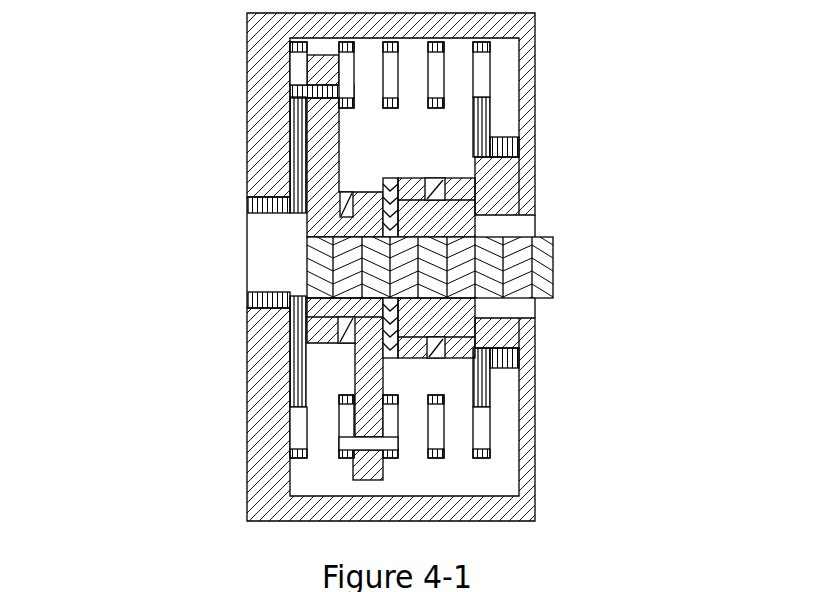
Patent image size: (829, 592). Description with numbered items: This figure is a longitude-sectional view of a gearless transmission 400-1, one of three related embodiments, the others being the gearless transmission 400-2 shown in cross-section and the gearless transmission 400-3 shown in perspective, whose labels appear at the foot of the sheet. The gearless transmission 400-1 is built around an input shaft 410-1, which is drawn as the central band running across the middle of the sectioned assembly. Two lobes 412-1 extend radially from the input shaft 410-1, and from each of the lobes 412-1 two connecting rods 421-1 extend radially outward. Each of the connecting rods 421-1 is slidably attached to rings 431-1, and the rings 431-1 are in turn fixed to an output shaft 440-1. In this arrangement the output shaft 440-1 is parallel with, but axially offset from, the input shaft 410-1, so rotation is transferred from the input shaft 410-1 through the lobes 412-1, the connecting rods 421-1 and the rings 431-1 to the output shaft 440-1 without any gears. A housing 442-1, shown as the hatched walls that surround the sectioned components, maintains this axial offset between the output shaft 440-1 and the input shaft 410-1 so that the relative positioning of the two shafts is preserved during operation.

The gearless transmission 400-1 is at (200, 111).
The gearless transmission 400-2 is at (54, 584).
The gearless transmission 400-3 is at (736, 581).
The input shaft 410-1 is at (532, 272).
The lobes 412-1 is at (343, 307).
The connecting rods 421-1 is at (463, 190).
The rings 431-1 is at (437, 460).
The output shaft 440-1 is at (248, 202).
The housing 442-1 is at (265, 402).